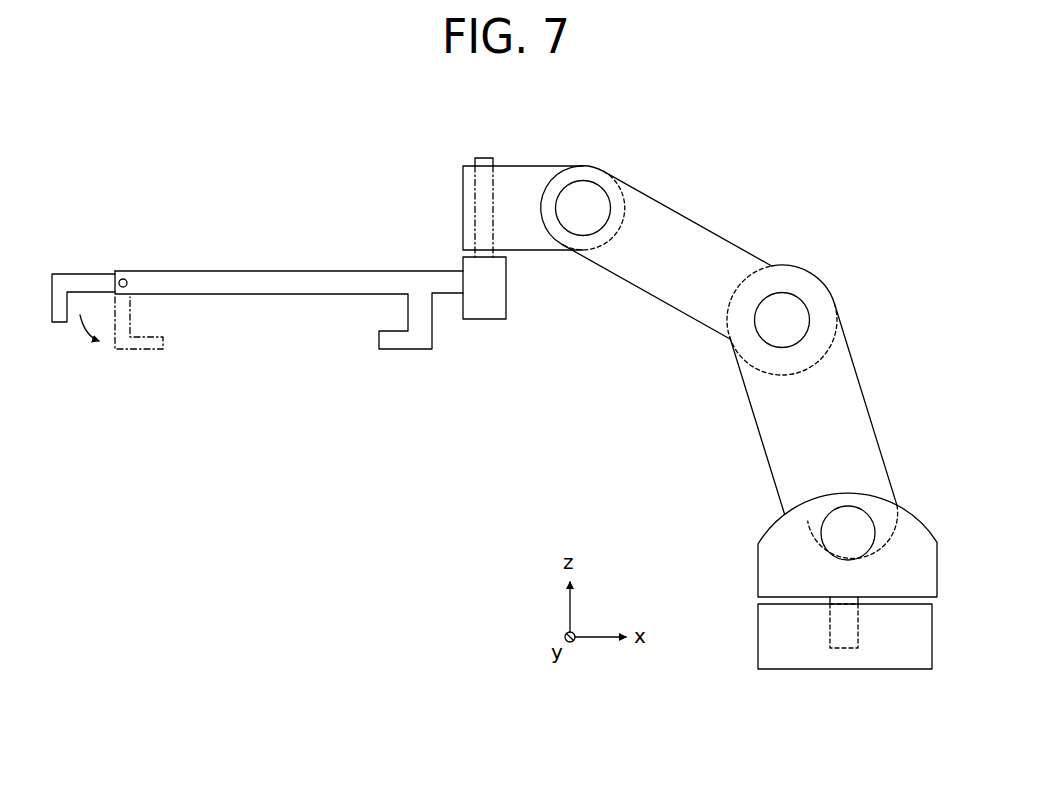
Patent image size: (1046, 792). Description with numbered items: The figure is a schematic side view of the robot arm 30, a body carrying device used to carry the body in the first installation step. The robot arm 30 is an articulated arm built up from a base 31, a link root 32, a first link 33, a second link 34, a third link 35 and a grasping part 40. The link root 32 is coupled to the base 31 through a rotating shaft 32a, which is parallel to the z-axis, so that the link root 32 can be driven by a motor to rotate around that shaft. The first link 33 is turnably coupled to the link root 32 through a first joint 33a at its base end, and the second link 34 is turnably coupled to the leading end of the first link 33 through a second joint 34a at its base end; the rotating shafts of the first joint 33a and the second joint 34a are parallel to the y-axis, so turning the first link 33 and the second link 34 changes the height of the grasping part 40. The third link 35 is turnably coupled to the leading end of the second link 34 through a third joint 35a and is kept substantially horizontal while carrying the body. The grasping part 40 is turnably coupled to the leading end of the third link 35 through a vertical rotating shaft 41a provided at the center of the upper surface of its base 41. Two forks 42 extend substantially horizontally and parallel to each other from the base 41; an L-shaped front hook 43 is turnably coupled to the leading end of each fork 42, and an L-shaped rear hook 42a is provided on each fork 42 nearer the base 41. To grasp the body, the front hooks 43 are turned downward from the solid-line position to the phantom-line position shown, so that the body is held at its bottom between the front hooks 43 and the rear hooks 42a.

The robot arm 30 is at (740, 202).
The base 31 is at (765, 645).
The link root 32 is at (762, 567).
The rotating shaft 32a is at (845, 646).
The first link 33 is at (755, 408).
The first joint 33a is at (870, 518).
The second link 34 is at (643, 290).
The second joint 34a is at (802, 303).
The third link 35 is at (530, 170).
The third joint 35a is at (583, 182).
The grasping part 40 is at (277, 250).
The base 41 is at (490, 310).
The rotating shaft 41a is at (480, 158).
The fork 42 is at (323, 284).
The rear hook 42a is at (407, 340).
The front hook 43 is at (62, 323).